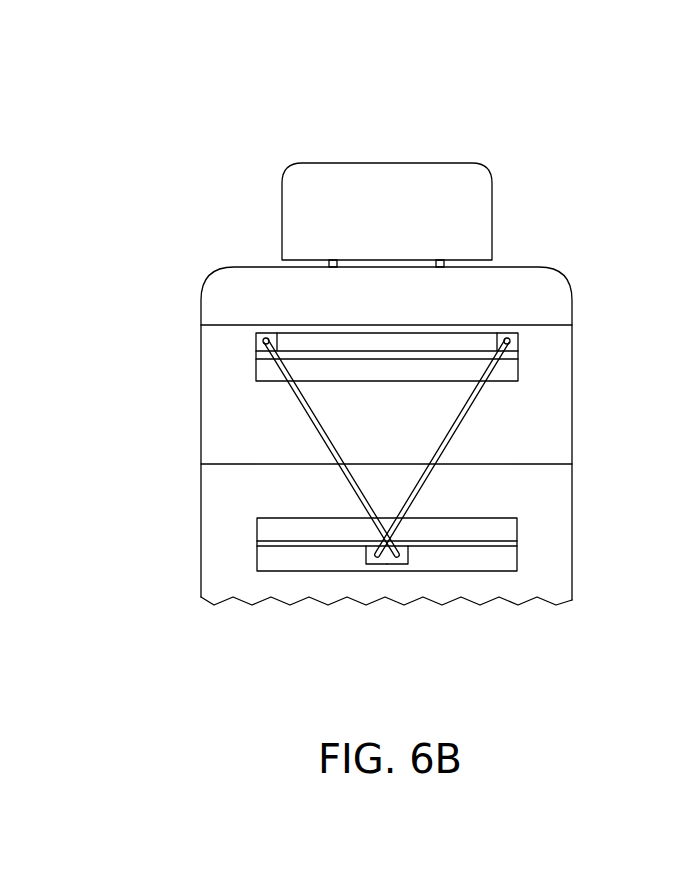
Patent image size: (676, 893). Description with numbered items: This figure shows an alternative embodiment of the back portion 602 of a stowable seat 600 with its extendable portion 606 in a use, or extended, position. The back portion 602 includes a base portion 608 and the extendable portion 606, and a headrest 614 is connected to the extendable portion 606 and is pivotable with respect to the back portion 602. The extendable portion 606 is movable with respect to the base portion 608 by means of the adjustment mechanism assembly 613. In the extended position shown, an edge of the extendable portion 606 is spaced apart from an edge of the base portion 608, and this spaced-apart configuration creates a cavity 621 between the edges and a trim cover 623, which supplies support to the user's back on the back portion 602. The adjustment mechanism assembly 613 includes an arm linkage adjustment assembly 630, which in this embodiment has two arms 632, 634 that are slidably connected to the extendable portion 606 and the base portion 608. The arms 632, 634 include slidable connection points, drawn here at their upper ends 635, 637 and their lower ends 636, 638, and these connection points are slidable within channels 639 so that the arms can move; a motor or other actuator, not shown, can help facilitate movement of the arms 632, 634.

The stowable seat 600 is at (430, 140).
The adjustment mechanism assembly 613 is at (589, 208).
The headrest 614 is at (482, 222).
The back portion 602 is at (185, 473).
The extendable portion 606 is at (568, 303).
The trim cover 623 is at (553, 402).
The base portion 608 is at (570, 535).
The cavity 621 is at (217, 407).
The arm linkage adjustment assembly 630 is at (227, 563).
The left pivot 635 is at (265, 336).
The right pivot 637 is at (508, 336).
The arm 632 is at (318, 431).
The arm 634 is at (455, 430).
The channel 639 is at (457, 560).
The first strut lower end 636 is at (377, 560).
The second strut lower end 638 is at (395, 560).